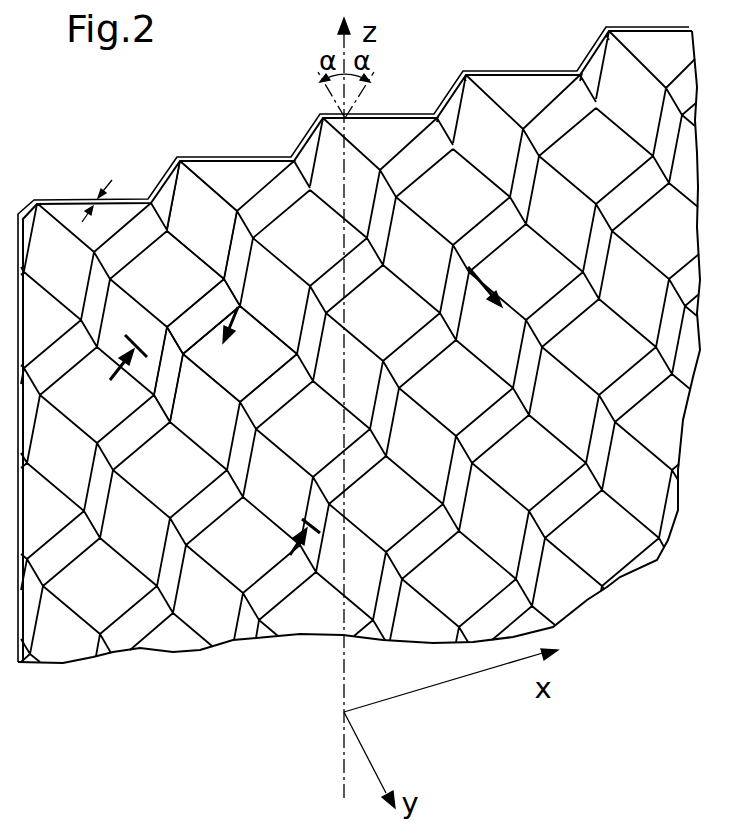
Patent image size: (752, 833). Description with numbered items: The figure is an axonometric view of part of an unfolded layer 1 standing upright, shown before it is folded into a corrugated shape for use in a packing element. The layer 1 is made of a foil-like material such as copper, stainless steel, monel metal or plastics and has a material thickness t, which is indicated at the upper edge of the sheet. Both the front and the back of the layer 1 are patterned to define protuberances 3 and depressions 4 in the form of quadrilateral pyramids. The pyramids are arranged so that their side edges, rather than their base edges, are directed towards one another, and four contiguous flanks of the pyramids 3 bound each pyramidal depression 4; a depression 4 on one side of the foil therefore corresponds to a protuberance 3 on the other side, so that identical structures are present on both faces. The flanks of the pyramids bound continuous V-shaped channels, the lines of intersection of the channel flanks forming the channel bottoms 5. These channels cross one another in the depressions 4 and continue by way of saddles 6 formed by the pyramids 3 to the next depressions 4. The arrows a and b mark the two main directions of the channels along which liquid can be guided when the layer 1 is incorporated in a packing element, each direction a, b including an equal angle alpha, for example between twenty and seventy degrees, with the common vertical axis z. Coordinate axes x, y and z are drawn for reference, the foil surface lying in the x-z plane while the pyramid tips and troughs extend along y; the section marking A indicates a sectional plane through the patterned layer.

The layer 1 is at (146, 158).
The protuberances 3 is at (436, 320).
The depressions 4 is at (178, 128).
The channel bottoms 5 is at (236, 128).
The saddles 6 is at (523, 315).
The material thickness t is at (94, 190).
The arrow a (first main channel direction) a is at (237, 333).
The arrow b (second main channel direction) b is at (485, 301).
The section line A- A is at (211, 452).